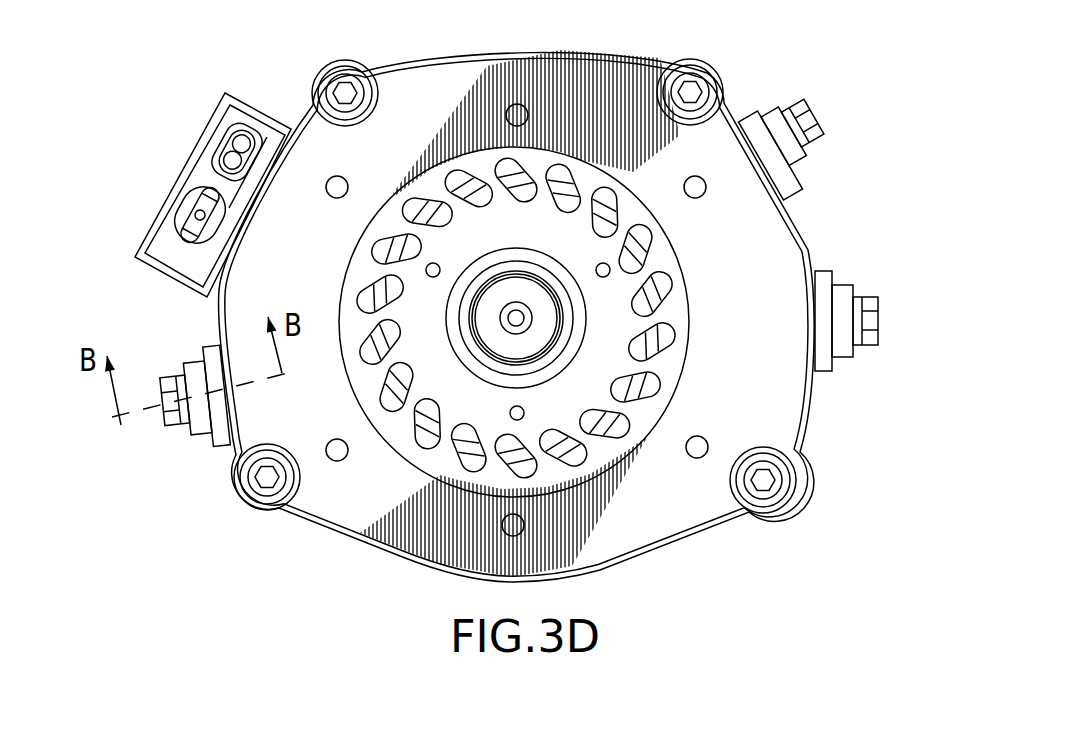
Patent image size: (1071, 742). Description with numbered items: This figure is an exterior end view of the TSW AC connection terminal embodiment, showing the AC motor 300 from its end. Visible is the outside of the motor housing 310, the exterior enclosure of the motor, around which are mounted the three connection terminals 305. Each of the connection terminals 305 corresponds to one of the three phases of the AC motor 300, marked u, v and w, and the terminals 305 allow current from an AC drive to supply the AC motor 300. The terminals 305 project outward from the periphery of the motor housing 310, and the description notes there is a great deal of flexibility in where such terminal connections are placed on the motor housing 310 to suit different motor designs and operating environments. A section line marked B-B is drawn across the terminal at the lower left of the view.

The AC motor 300 is at (548, 292).
The connection terminals 305 is at (816, 144).
The motor housing 310 is at (721, 531).